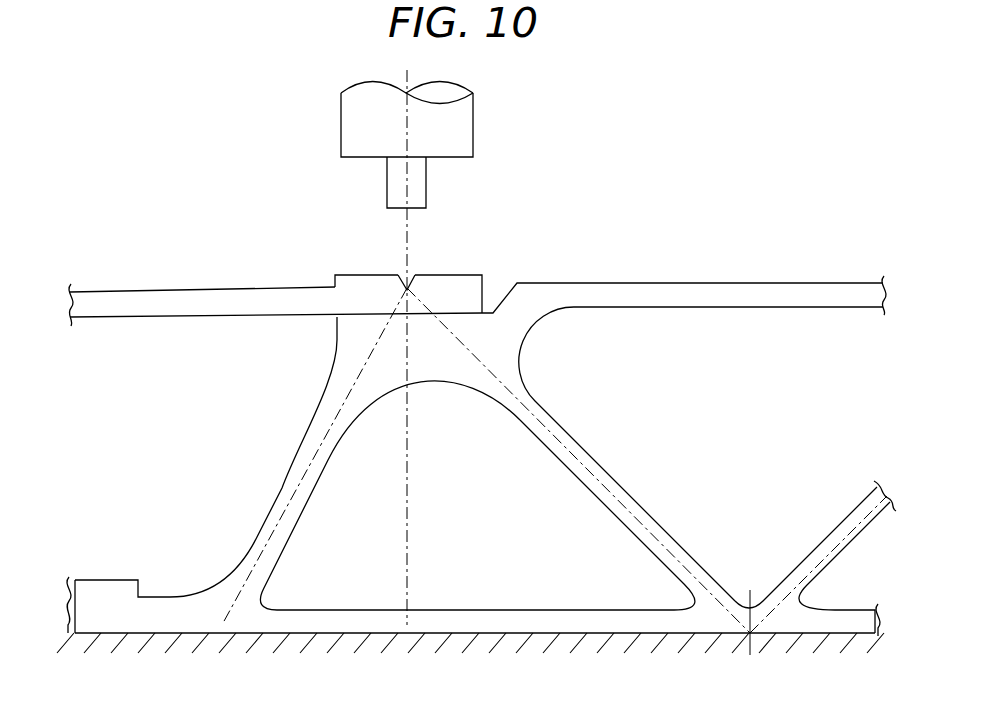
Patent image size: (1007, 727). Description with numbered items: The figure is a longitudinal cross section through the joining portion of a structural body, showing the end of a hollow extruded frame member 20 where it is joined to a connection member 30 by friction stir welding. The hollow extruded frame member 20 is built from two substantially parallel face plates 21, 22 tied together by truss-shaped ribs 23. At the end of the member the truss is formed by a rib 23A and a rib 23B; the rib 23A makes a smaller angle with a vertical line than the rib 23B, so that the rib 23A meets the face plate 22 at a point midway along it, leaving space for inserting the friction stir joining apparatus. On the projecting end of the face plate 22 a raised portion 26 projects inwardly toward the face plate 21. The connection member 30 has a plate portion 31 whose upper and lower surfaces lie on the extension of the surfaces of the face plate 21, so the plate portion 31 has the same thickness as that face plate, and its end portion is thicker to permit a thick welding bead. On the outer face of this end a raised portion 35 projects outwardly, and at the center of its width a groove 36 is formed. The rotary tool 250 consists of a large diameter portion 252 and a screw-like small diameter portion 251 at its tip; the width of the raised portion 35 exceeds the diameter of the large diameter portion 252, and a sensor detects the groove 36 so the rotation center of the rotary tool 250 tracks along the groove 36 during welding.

The hollow extruded frame member 20 is at (166, 644).
The face plate 21 is at (723, 290).
The face plate 22 is at (505, 622).
The truss-shaped rib 23 is at (842, 517).
The rib 23A is at (292, 522).
The rib 23B is at (643, 530).
The raised portion 26 is at (116, 592).
The connection member 30 is at (171, 245).
The plate portion 31 is at (237, 293).
The raised portion 35 is at (352, 284).
The groove 36 is at (415, 285).
The rotary tool 250 is at (326, 126).
The small diameter portion 251 is at (425, 185).
The large diameter portion 252 is at (474, 127).